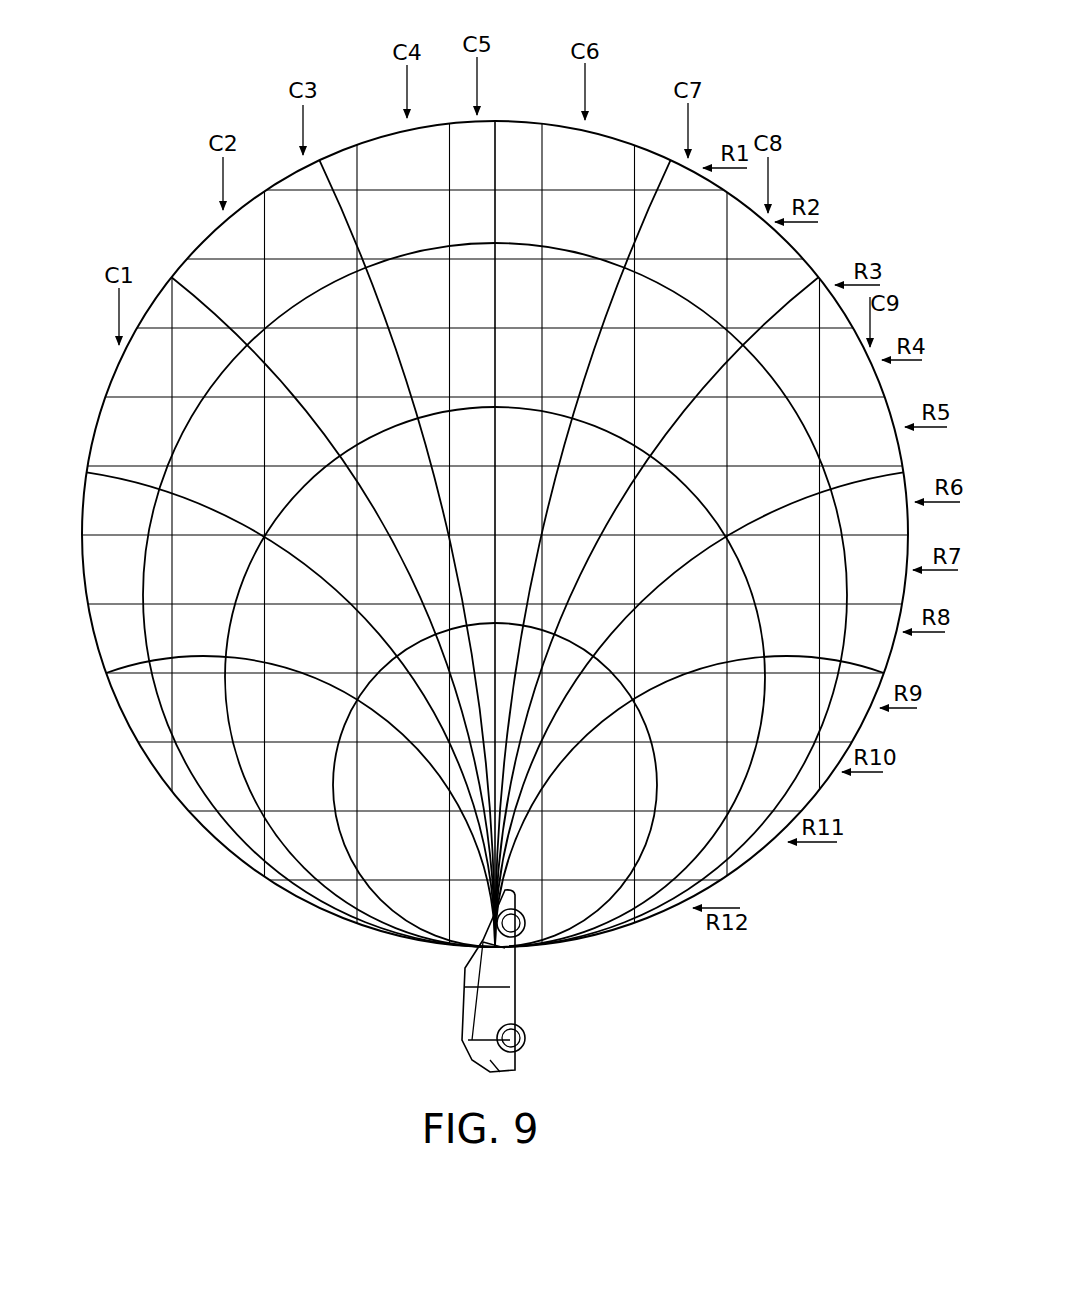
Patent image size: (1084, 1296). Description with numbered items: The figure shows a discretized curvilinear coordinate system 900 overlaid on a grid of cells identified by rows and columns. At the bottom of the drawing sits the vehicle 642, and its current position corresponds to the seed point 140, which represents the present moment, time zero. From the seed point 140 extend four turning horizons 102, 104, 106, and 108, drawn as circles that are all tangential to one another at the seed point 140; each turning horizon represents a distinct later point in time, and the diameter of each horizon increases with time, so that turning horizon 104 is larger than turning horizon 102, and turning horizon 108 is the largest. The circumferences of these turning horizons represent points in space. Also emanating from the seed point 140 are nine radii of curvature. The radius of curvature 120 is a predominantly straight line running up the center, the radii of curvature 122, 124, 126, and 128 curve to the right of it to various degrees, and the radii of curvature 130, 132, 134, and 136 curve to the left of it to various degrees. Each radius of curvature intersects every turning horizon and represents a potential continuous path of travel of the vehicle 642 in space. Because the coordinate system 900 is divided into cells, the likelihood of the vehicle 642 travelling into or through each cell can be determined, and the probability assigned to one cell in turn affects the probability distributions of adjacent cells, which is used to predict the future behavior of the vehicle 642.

The turning horizon 102 is at (580, 628).
The turning horizon 104 is at (617, 420).
The turning horizon 106 is at (682, 286).
The turning horizon 108 is at (601, 131).
The radius of curvature 120 is at (497, 132).
The radius of curvature 122 is at (674, 168).
The radius of curvature 124 is at (818, 282).
The radius of curvature 126 is at (904, 473).
The radius of curvature 128 is at (886, 673).
The radius of curvature 130 is at (322, 172).
The radius of curvature 132 is at (176, 282).
The radius of curvature 134 is at (86, 471).
The radius of curvature 136 is at (106, 672).
The seed point 140 is at (500, 955).
The vehicle 642 is at (478, 981).
The discretized curvilinear coordinate system 900 is at (208, 105).